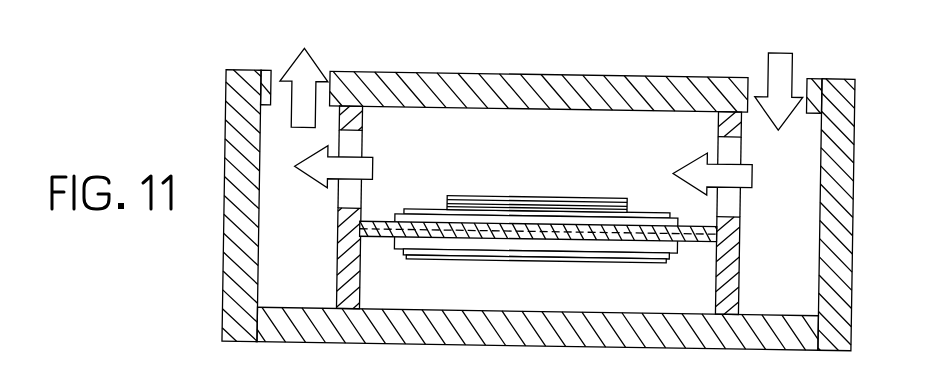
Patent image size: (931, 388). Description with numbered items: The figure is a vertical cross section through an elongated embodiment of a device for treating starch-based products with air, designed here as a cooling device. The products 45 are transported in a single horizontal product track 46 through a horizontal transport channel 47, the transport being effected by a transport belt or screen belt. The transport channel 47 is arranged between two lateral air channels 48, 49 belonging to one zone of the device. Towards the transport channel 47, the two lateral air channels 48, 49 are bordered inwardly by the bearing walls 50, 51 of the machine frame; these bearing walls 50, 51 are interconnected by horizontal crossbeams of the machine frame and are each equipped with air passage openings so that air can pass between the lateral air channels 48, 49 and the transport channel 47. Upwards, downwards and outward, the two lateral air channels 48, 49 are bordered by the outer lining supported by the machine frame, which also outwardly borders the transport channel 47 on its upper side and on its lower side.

The products 45 is at (493, 198).
The product track 46 is at (653, 211).
The transport channel 47 is at (419, 124).
The lateral air channel 48 is at (269, 154).
The lateral air channel 49 is at (756, 140).
The bearing wall 50 is at (348, 261).
The bearing wall 51 is at (729, 259).